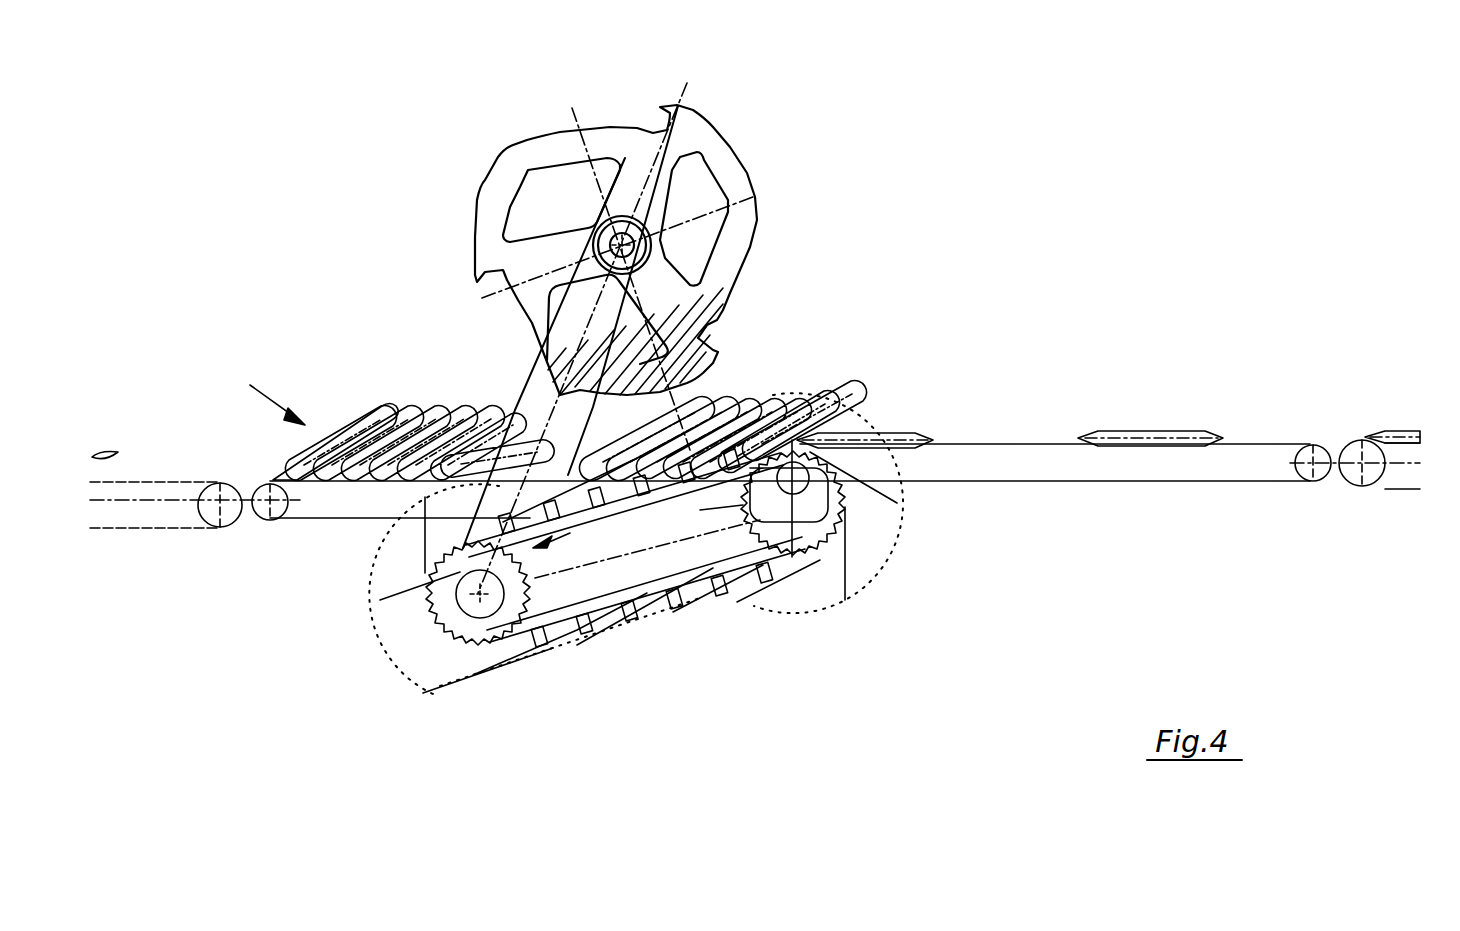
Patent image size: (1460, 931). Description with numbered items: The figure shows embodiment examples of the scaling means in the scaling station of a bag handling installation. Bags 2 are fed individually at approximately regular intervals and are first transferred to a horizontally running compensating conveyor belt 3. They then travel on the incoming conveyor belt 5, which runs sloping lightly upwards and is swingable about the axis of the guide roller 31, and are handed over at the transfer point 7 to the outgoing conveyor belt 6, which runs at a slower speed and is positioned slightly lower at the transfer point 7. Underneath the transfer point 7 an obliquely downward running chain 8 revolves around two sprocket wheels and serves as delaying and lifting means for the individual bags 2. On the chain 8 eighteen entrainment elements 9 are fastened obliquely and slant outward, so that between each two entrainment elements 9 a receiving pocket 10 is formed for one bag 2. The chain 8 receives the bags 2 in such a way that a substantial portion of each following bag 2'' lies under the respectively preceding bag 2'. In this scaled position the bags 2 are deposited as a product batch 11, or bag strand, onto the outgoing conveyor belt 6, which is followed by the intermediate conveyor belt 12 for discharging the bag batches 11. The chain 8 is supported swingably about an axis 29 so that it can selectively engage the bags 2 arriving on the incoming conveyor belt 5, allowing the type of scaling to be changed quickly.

The bag 2 is at (1156, 400).
The preceding bag 2' is at (413, 417).
The following bag 2'' is at (618, 387).
The compensating conveyor belt 3 is at (1398, 490).
The incoming conveyor belt 5 is at (1033, 442).
The outgoing conveyor belt 6 is at (340, 520).
The transfer point 7 is at (808, 365).
The chain 8 is at (733, 575).
The entrainment element 9 is at (553, 650).
The receiving pocket 10 is at (682, 610).
The product batch 11 is at (254, 391).
The intermediate conveyor belt 12 is at (150, 530).
The axis 29 is at (463, 548).
The guide roller 31 is at (1302, 470).